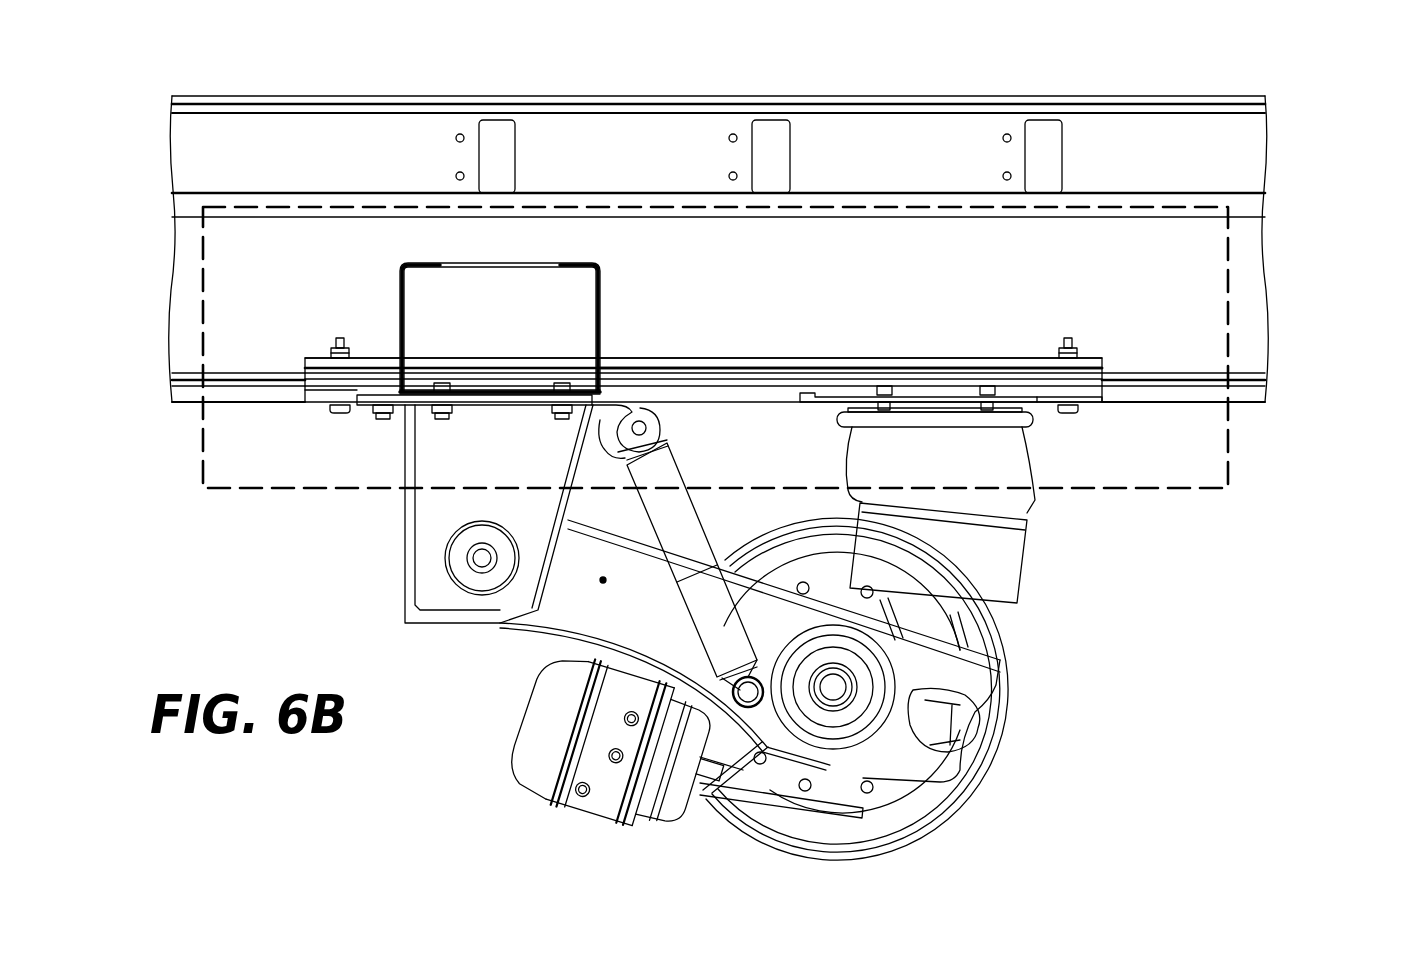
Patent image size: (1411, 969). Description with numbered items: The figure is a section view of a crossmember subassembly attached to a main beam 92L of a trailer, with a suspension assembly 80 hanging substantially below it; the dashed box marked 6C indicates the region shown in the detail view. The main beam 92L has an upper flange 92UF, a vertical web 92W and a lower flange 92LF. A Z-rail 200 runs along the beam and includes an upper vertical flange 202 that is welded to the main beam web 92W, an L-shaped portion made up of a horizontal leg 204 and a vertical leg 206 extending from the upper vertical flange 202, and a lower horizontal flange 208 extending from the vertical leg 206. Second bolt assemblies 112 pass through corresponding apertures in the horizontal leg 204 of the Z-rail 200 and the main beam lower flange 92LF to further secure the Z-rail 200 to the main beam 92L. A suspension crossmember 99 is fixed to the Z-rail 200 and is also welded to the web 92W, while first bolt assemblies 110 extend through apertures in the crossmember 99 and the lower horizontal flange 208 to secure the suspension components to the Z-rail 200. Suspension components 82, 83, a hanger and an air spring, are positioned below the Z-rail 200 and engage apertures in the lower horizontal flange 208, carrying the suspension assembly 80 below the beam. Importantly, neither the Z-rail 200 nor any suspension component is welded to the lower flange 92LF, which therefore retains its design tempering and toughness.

The trailer suspension assembly 80 is at (1005, 712).
The suspension component 82 is at (406, 539).
The suspension component 83 is at (1027, 498).
The main beam 92L is at (1272, 150).
The main beam upper flange 92UF is at (1267, 97).
The main beam web 92W is at (1255, 265).
The main beam lower flange 92LF is at (1248, 403).
The suspension crossmember 99 is at (398, 285).
The first bolt assemblies 110 is at (562, 422).
The second bolt assemblies 112 is at (336, 340).
The Z-rail 200 is at (1003, 359).
The upper vertical flange 202 is at (1103, 362).
The horizontal leg 204 is at (942, 366).
The vertical leg 206 is at (1095, 395).
The lower horizontal flange 208 is at (1048, 402).
The detail callout FIG. 6C is at (1228, 488).